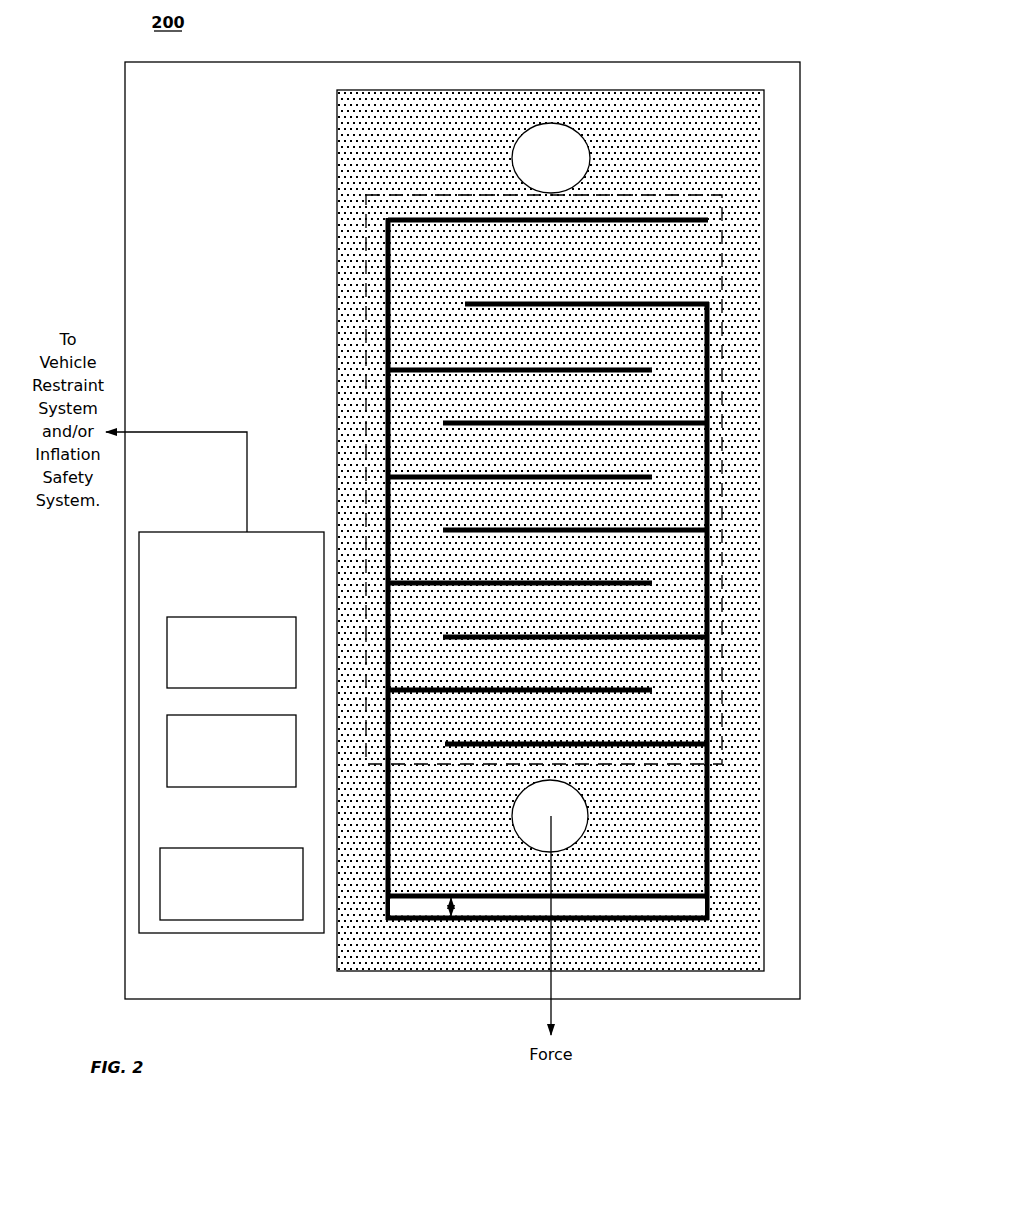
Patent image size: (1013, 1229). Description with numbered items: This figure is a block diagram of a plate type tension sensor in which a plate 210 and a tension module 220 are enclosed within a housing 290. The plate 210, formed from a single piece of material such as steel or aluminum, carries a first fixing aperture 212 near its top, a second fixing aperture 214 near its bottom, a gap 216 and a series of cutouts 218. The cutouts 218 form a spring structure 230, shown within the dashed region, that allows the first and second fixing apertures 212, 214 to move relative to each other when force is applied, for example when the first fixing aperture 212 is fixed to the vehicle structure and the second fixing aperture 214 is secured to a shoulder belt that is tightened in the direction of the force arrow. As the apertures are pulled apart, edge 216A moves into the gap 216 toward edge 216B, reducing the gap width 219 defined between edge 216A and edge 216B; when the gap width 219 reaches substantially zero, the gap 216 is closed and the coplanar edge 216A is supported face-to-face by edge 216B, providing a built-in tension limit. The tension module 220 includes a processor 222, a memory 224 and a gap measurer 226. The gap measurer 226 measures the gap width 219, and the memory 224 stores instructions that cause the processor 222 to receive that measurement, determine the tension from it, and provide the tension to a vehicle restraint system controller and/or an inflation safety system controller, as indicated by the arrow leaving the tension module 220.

The plate 210 is at (708, 162).
The first fixing aperture 212 is at (530, 160).
The second fixing aperture 214 is at (560, 822).
The gap 216 is at (636, 1004).
The edge 216A is at (608, 897).
The edge 216B is at (567, 927).
The cutouts 218 is at (712, 591).
The gap width 219 is at (410, 991).
The tension module 220 is at (216, 593).
The processor 222 is at (216, 673).
The memory 224 is at (216, 771).
The gap measurer 226 is at (216, 905).
The spring structure 230 is at (724, 267).
The housing 290 is at (462, 530).